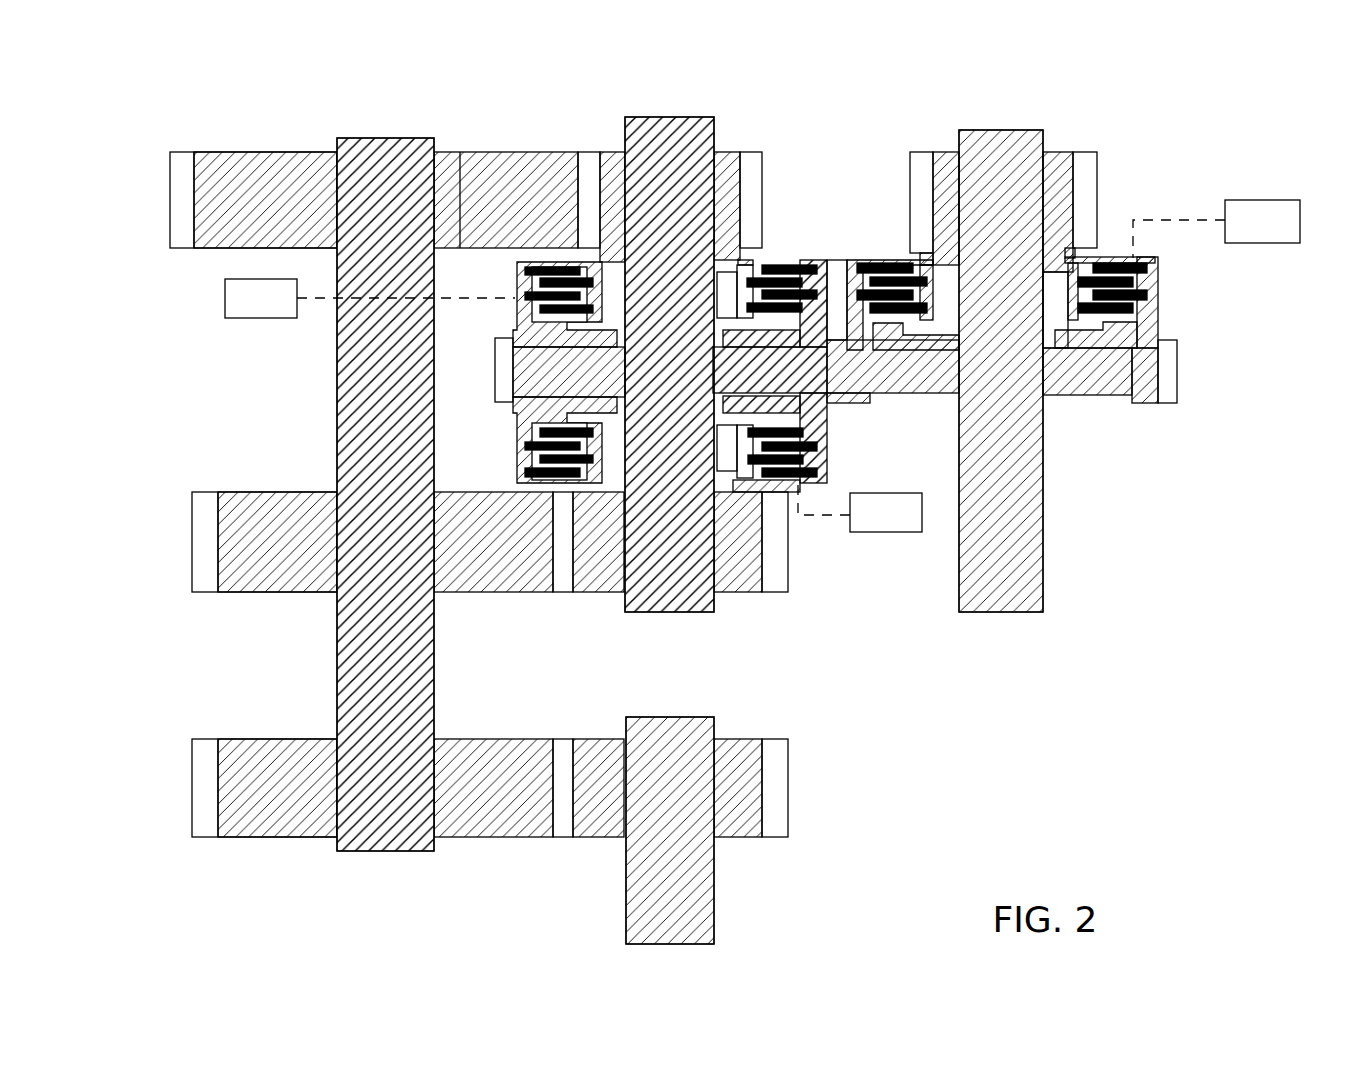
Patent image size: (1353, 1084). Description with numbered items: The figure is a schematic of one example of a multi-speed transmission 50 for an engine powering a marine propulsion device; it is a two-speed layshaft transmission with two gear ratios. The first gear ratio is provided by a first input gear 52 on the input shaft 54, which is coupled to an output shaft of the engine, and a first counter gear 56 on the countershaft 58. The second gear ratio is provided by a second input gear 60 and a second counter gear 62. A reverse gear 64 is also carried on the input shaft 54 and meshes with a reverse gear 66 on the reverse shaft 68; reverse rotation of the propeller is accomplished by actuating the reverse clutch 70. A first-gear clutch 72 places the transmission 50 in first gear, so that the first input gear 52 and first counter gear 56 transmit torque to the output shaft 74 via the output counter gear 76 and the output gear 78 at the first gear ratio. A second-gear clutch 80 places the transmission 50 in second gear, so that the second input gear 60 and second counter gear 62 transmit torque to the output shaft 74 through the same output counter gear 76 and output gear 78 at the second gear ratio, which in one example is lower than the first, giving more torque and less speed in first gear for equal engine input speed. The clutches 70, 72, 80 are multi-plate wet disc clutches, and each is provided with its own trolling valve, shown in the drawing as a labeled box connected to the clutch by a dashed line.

The multi-speed transmission 50 is at (190, 96).
The first input gear 52 is at (762, 170).
The input shaft 54 is at (624, 133).
The first counter gear 56 is at (170, 210).
The countershaft 58 is at (337, 382).
The second input gear 60 is at (788, 566).
The second counter gear 62 is at (192, 546).
The reverse gear 64 is at (495, 363).
The reverse gear 66 is at (1177, 370).
The reverse shaft 68 is at (1043, 533).
The reverse clutch 70 is at (1157, 287).
The first-gear clutch 72 is at (782, 262).
The output shaft 74 is at (714, 895).
The output counter gear 76 is at (192, 795).
The output gear 78 is at (788, 795).
The second-gear clutch 80 is at (820, 442).